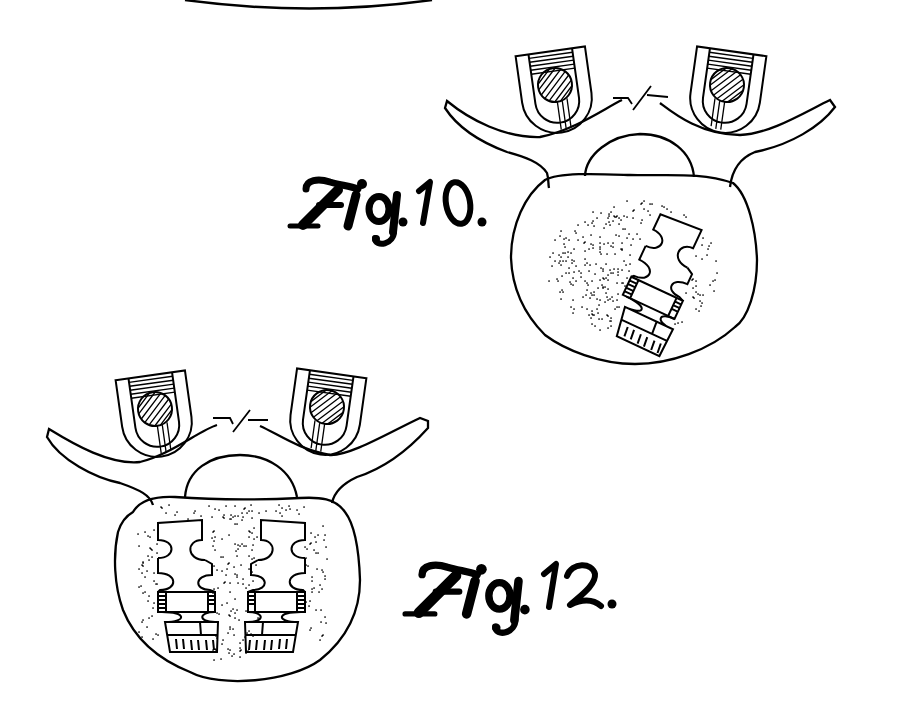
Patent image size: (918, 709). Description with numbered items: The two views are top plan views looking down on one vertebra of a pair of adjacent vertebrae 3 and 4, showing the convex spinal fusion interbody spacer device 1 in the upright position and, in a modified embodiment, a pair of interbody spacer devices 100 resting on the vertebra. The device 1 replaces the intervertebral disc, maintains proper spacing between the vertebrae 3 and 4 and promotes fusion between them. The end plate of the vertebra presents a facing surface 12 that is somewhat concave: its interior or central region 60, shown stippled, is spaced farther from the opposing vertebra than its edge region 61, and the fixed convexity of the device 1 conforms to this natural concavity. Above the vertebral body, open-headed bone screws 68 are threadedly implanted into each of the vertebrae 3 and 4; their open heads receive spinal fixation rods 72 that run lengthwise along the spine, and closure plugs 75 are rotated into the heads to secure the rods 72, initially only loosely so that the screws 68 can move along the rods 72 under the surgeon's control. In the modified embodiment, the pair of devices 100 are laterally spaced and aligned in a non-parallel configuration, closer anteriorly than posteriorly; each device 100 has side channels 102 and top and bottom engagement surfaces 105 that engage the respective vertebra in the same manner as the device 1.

In FIG. 10, the convex spinal fusion interbody spacer device 1 is at (672, 332).
In FIG. 10, the vertebra 4 is at (756, 253).
In FIG. 10, the facing surface of vertebral end plate 12 is at (693, 283).
In FIG. 10, the interior or central region 60 is at (588, 272).
In FIG. 10, the edge region 61 is at (737, 208).
In FIG. 10, the open-headed bone screw 68 is at (590, 63).
In FIG. 12, the open-headed bone screw 68 is at (187, 378).
In FIG. 10, the spinal fixation rod 72 is at (537, 92).
In FIG. 12, the spinal fixation rod 72 is at (135, 420).
In FIG. 12, the closure plug 75 is at (132, 375).
In FIG. 12, the vertebra 3 is at (327, 650).
In FIG. 12, the spacer device 100 is at (170, 605).
In FIG. 12, the side channel 102 is at (173, 553).
In FIG. 12, the top and bottom engagement surface 105 is at (173, 525).